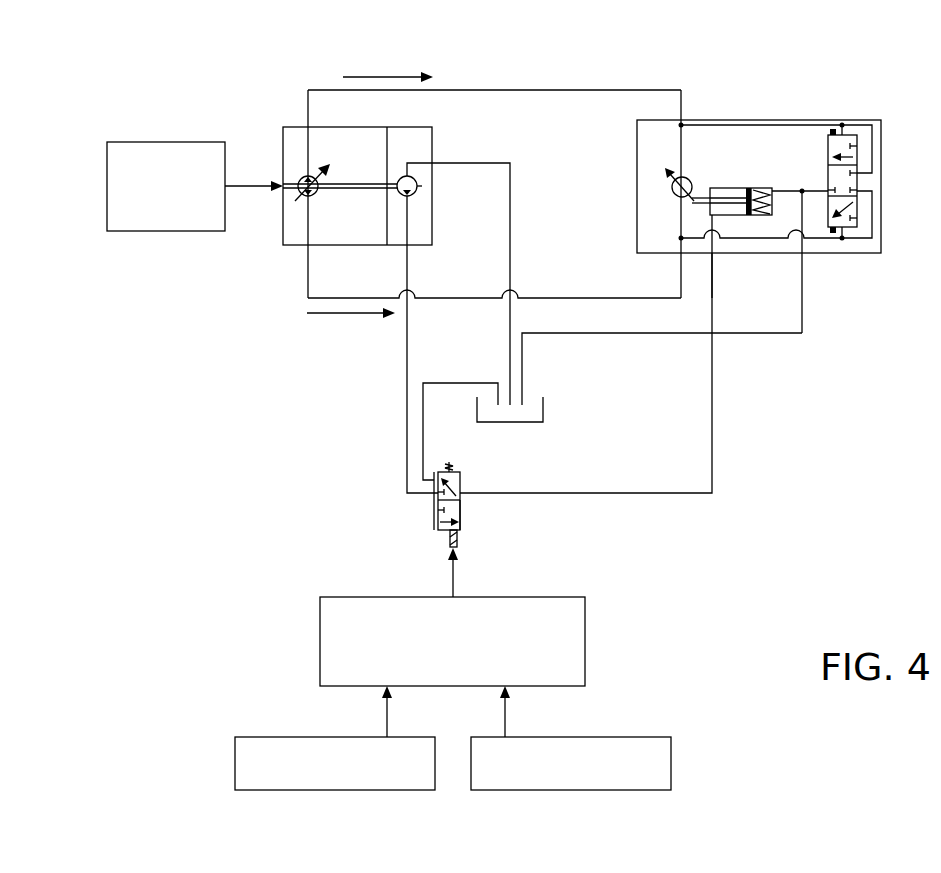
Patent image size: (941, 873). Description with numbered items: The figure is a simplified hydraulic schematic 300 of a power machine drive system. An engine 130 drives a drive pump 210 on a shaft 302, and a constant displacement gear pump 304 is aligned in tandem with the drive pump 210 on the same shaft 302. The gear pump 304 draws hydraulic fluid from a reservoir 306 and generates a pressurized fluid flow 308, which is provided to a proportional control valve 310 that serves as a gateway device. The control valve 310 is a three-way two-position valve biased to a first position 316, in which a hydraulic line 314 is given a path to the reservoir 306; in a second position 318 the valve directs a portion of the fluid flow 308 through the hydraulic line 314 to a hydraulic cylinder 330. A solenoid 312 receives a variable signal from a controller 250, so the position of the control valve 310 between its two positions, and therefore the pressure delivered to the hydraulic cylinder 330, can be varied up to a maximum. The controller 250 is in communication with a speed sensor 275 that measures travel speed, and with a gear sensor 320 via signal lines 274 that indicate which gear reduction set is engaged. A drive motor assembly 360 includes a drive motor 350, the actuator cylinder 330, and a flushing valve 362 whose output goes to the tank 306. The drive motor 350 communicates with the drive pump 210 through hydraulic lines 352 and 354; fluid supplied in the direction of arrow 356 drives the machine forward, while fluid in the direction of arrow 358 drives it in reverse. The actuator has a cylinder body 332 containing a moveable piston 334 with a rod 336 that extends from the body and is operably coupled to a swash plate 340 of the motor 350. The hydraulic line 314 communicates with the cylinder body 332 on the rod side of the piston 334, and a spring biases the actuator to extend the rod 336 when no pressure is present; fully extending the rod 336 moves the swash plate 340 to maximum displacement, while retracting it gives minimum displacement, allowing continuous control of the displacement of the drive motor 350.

The engine 130 is at (166, 186).
The drive pump 210 is at (305, 176).
The controller 250 is at (452, 641).
The signal lines 274 is at (387, 712).
The speed sensor 275 is at (571, 763).
The hydraulic schematic 300 is at (590, 60).
The shaft 302 is at (337, 192).
The constant displacement gear pump 304 is at (404, 176).
The reservoir 306 is at (534, 398).
The pressurized fluid flow 308 is at (407, 375).
The proportional control valve 310 is at (428, 517).
The solenoid 312 is at (448, 537).
The hydraulic line 314 is at (558, 493).
The first position 316 is at (450, 468).
The second position 318 is at (460, 518).
The gear sensor 320 is at (335, 763).
The hydraulic cylinder 330 is at (720, 178).
The cylinder body 332 is at (750, 216).
The piston 334 is at (747, 216).
The rod 336 is at (725, 190).
The swash plate 340 is at (689, 198).
The drive motor 350 is at (667, 175).
The hydraulic line 352 is at (550, 90).
The hydraulic line 354 is at (600, 298).
The arrow 356 is at (383, 74).
The arrow 358 is at (358, 316).
The drive motor assembly 360 is at (804, 112).
The flushing valve 362 is at (872, 212).